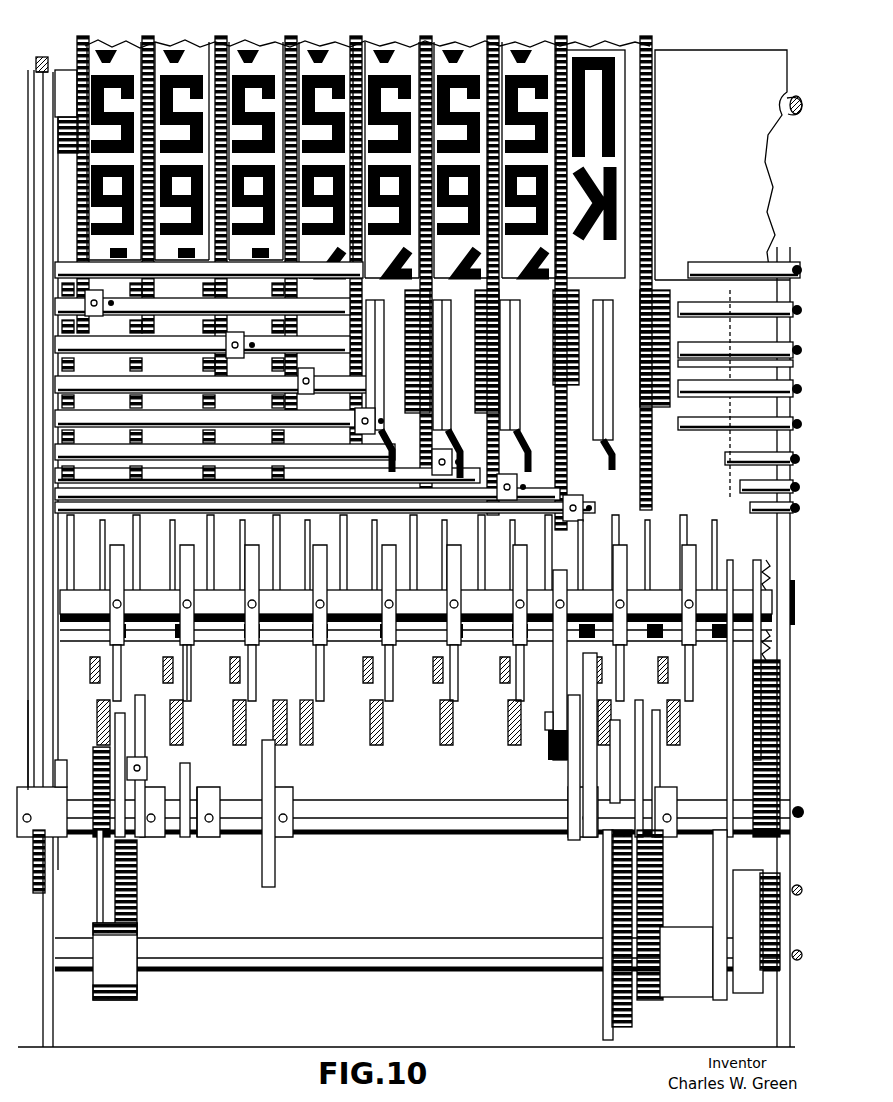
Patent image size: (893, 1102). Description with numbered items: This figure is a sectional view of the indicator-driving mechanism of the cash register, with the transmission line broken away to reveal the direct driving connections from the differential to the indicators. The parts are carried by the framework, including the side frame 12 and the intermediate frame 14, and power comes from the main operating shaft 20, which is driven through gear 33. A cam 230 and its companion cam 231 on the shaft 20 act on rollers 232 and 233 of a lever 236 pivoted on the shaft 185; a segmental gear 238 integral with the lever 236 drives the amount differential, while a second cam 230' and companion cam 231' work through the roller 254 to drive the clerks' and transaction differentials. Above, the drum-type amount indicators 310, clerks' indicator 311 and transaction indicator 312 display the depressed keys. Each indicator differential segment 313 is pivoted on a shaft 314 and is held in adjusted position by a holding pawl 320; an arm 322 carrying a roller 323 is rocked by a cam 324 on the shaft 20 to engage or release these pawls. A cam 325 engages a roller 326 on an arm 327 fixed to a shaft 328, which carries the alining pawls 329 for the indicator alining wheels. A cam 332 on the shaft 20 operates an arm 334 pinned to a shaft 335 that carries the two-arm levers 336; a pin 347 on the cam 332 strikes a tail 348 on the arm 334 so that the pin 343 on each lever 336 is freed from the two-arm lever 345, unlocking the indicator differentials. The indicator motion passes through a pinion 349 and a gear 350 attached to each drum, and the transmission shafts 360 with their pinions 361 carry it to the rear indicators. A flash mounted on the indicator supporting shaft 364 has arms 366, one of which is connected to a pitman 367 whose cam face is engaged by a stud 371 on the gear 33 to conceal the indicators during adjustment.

The side frame 12 is at (53, 1020).
The intermediate frame 14 is at (777, 1020).
The main operating shaft 20 is at (406, 812).
The gear 33 is at (38, 892).
The shaft 185 is at (255, 946).
The cam 230 is at (156, 766).
The cam 230' is at (674, 768).
The companion cam 231 is at (124, 750).
The companion cam 231' is at (639, 778).
The roller 232 is at (145, 768).
The roller 233 is at (131, 900).
The lever 236 is at (137, 985).
The segmental gear 238 is at (100, 912).
The roller 254 is at (661, 768).
The amount indicator 310 is at (425, 54).
The clerks' indicator 311 is at (597, 46).
The transaction indicator 312 is at (672, 44).
The indicator differential segment 313 is at (345, 335).
The shaft 314 is at (780, 393).
The holding pawl 320 is at (233, 722).
The arm 322 is at (278, 700).
The roller 323 is at (308, 745).
The cam 324 is at (275, 872).
The cam 325 is at (190, 770).
The roller 326 is at (200, 787).
The arm 327 is at (188, 652).
The shaft 328 is at (713, 632).
The alining pawl 329 is at (68, 533).
The cam 332 is at (568, 770).
The arm 334 is at (556, 640).
The shaft 335 is at (583, 680).
The two-arm lever 336 is at (104, 548).
The pin 343 is at (462, 415).
The two-arm lever 345 is at (405, 312).
The pin 347 is at (546, 725).
The tail 348 is at (548, 740).
The pinion 349 is at (375, 350).
The gear 350 is at (288, 52).
The shaft 360 is at (256, 264).
The pinion 361 is at (88, 328).
The indicator supporting shaft 364 is at (795, 126).
The arm 366 is at (62, 58).
The pitman 367 is at (28, 685).
The stud 371 is at (36, 748).